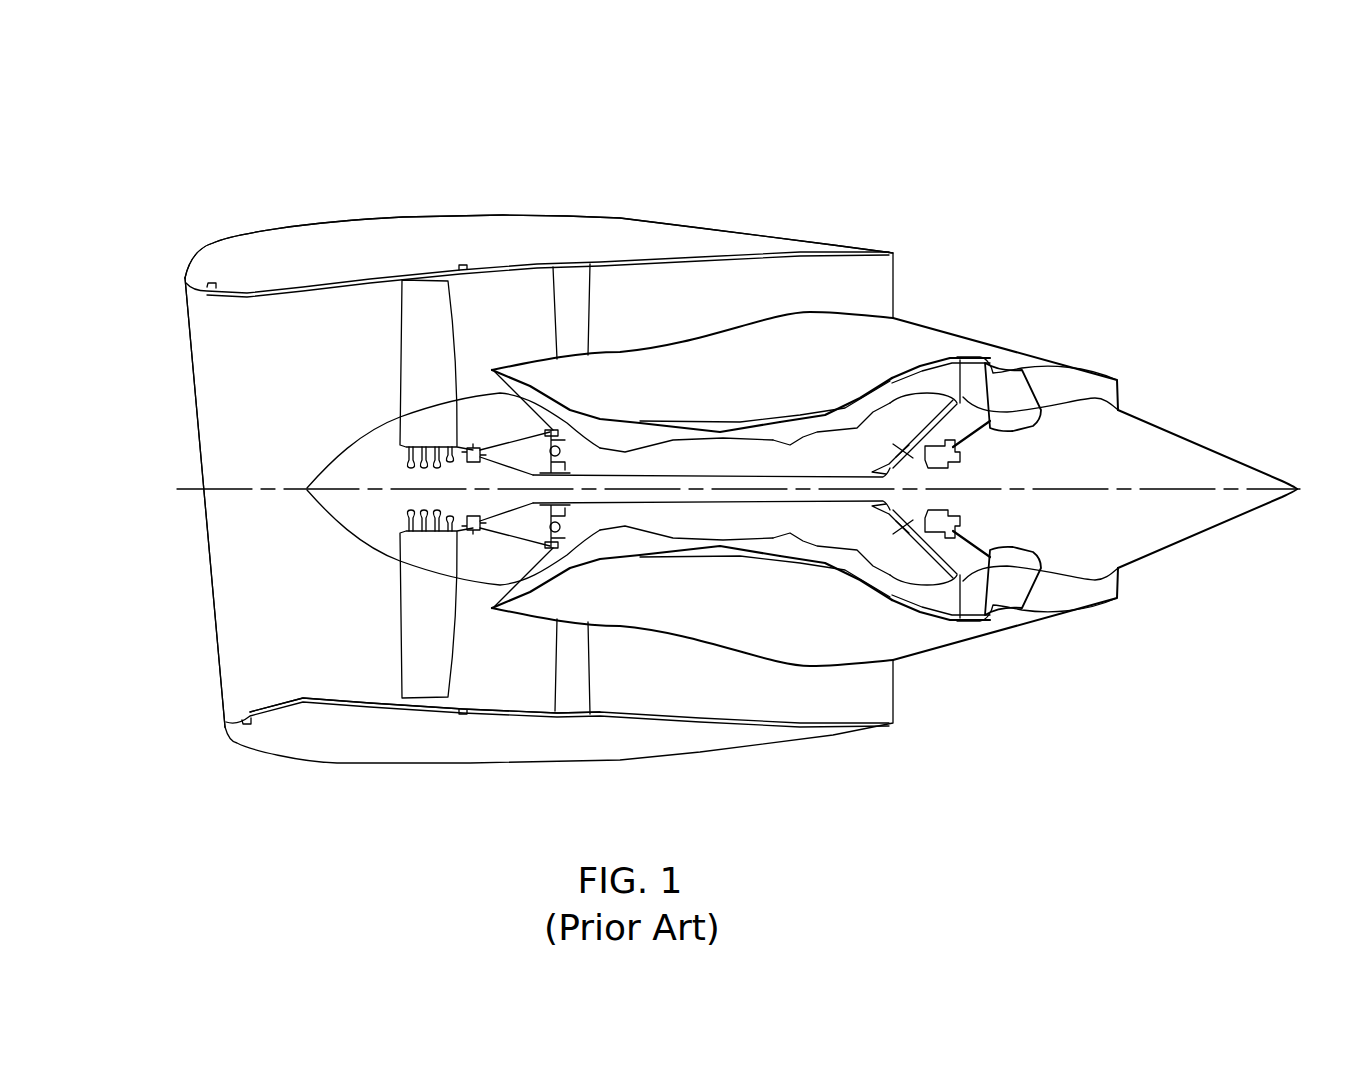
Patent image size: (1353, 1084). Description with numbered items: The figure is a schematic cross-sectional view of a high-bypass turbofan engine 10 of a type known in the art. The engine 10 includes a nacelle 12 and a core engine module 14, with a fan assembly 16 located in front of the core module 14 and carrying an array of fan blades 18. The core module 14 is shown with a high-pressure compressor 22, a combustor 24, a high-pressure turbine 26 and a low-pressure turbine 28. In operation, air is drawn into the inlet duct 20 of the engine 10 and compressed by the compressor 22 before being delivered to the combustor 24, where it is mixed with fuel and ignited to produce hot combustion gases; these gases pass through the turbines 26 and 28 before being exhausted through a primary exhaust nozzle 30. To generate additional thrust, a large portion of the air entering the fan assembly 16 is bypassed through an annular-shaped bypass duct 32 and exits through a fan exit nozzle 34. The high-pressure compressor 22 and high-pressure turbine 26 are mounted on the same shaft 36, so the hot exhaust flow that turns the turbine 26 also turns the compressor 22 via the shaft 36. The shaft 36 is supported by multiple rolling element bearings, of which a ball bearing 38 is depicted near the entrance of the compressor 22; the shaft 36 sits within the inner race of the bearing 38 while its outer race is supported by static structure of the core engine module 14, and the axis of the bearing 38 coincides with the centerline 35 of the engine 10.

The high-bypass turbofan engine 10 is at (1010, 76).
The nacelle 12 is at (492, 192).
The core engine module 14 is at (930, 640).
The fan assembly 16 is at (328, 614).
The fan blades 18 is at (406, 333).
The inlet duct 20 is at (168, 657).
The high-pressure compressor 22 is at (635, 435).
The combustor 24 is at (797, 435).
The high-pressure turbine 26 is at (830, 566).
The low-pressure turbine 28 is at (926, 376).
The primary exhaust nozzle 30 is at (1072, 353).
The bypass duct 32 is at (659, 314).
The fan exit nozzle 34 is at (908, 283).
The centerline 35 is at (1071, 492).
The shaft 36 is at (605, 530).
The ball bearing 38 is at (536, 524).